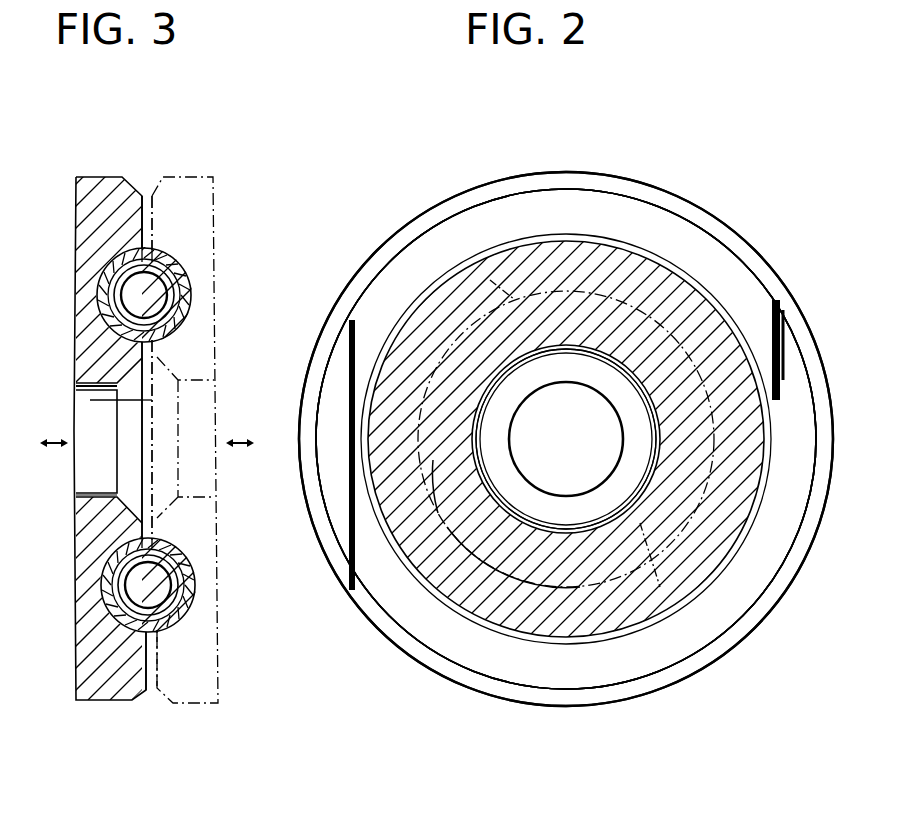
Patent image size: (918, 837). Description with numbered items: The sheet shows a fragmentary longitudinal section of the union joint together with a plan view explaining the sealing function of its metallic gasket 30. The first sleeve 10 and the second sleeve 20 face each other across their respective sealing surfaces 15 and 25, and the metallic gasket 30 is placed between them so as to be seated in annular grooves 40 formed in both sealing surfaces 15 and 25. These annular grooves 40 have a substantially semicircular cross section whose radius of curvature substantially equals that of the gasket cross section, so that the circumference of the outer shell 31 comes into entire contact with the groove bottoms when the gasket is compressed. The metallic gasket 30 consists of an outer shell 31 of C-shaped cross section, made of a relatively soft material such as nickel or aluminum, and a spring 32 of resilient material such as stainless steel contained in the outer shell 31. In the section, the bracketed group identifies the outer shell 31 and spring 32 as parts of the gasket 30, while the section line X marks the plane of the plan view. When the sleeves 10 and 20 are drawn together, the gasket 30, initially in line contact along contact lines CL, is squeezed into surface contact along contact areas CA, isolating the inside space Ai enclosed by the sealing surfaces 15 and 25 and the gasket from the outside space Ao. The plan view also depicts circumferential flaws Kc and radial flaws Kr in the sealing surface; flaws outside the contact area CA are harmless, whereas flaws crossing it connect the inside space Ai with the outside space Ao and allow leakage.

In FIG. 3, the first sleeve 10 is at (80, 172).
In FIG. 2, the first sleeve 10 is at (690, 198).
In FIG. 3, the sealing surface of first sleeve 15 is at (138, 192).
In FIG. 2, the sealing surface of first sleeve 15 is at (732, 240).
In FIG. 3, the second sleeve 20 is at (206, 170).
In FIG. 2, the second sleeve 20 is at (566, 439).
In FIG. 3, the sealing surface of second sleeve 25 is at (150, 195).
In FIG. 2, the sealing surface of second sleeve 25 is at (566, 439).
In FIG. 3, the metallic gasket 30 is at (280, 250).
In FIG. 3, the outer shell 31 is at (178, 272).
In FIG. 3, the spring 32 is at (175, 298).
In FIG. 3, the annular grooves 40 is at (152, 256).
In FIG. 3, the outside space Ao is at (145, 180).
In FIG. 2, the outside space Ao is at (585, 672).
In FIG. 3, the inside space Ai is at (140, 473).
In FIG. 2, the inside space Ai is at (560, 517).
In FIG. 3, the section line X is at (147, 430).
In FIG. 2, the circumferential flaws Kc is at (567, 247).
In FIG. 2, the radial flaws Kr is at (485, 285).
In FIG. 2, the contact lines CL is at (717, 530).
In FIG. 2, the contact areas CA is at (717, 563).